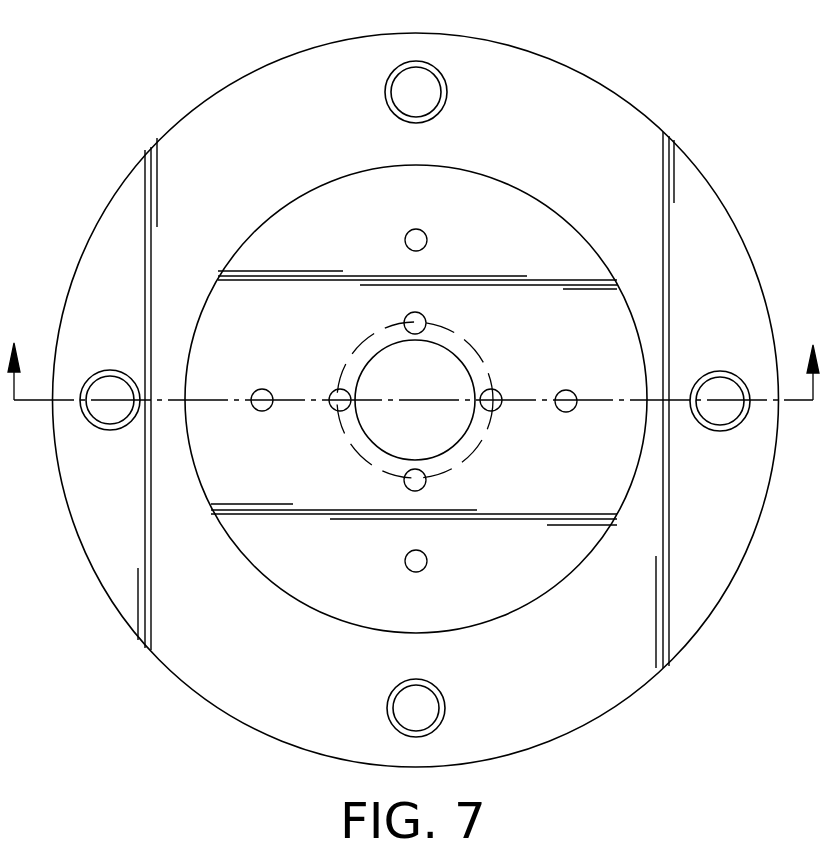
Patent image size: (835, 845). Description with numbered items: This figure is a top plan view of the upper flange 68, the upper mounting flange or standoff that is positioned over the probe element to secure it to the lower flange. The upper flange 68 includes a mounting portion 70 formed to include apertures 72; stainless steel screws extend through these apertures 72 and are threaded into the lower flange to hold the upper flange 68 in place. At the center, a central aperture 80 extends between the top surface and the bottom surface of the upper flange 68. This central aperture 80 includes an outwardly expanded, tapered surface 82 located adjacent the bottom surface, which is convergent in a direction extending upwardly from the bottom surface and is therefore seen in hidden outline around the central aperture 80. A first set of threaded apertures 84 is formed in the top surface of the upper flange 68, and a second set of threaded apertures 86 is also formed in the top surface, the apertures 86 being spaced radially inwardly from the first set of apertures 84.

The upper flange 68 is at (705, 106).
The mounting portion 70 is at (209, 660).
The apertures 72 is at (418, 76).
The central aperture 80 is at (442, 362).
The tapered surface 82 is at (360, 352).
The first set of threaded apertures 84 is at (428, 236).
The second set of threaded apertures 86 is at (406, 320).